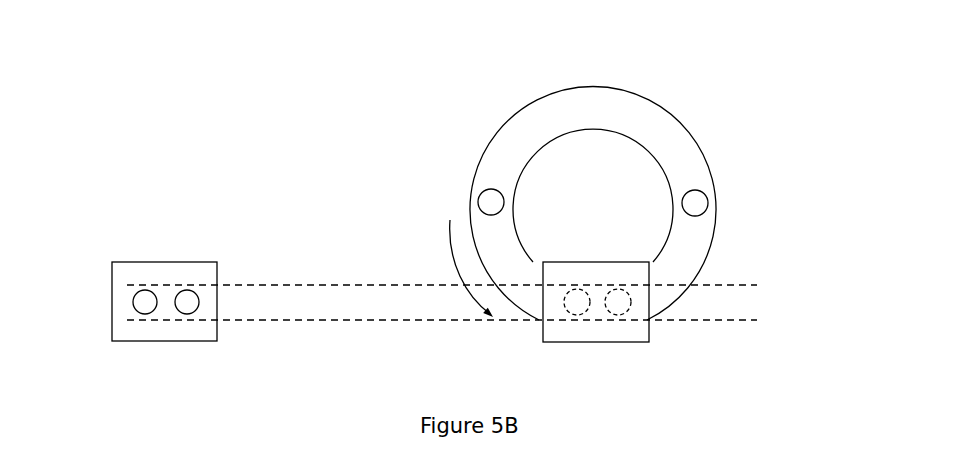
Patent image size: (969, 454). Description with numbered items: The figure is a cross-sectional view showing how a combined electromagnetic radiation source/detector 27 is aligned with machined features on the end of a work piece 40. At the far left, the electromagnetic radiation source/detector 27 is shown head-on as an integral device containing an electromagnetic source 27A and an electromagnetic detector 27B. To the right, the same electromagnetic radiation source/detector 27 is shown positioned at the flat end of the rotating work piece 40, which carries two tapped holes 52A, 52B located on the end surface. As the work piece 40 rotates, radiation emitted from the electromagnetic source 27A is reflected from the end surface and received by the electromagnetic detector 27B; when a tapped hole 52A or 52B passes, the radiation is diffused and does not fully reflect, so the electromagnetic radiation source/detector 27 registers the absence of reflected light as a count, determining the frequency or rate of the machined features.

The work piece 40 is at (626, 111).
The tapped hole 52A is at (487, 198).
The tapped hole 52B is at (700, 197).
The electromagnetic radiation source/detector 27 is at (148, 262).
The electromagnetic source 27A is at (143, 306).
The electromagnetic detector 27B is at (188, 306).